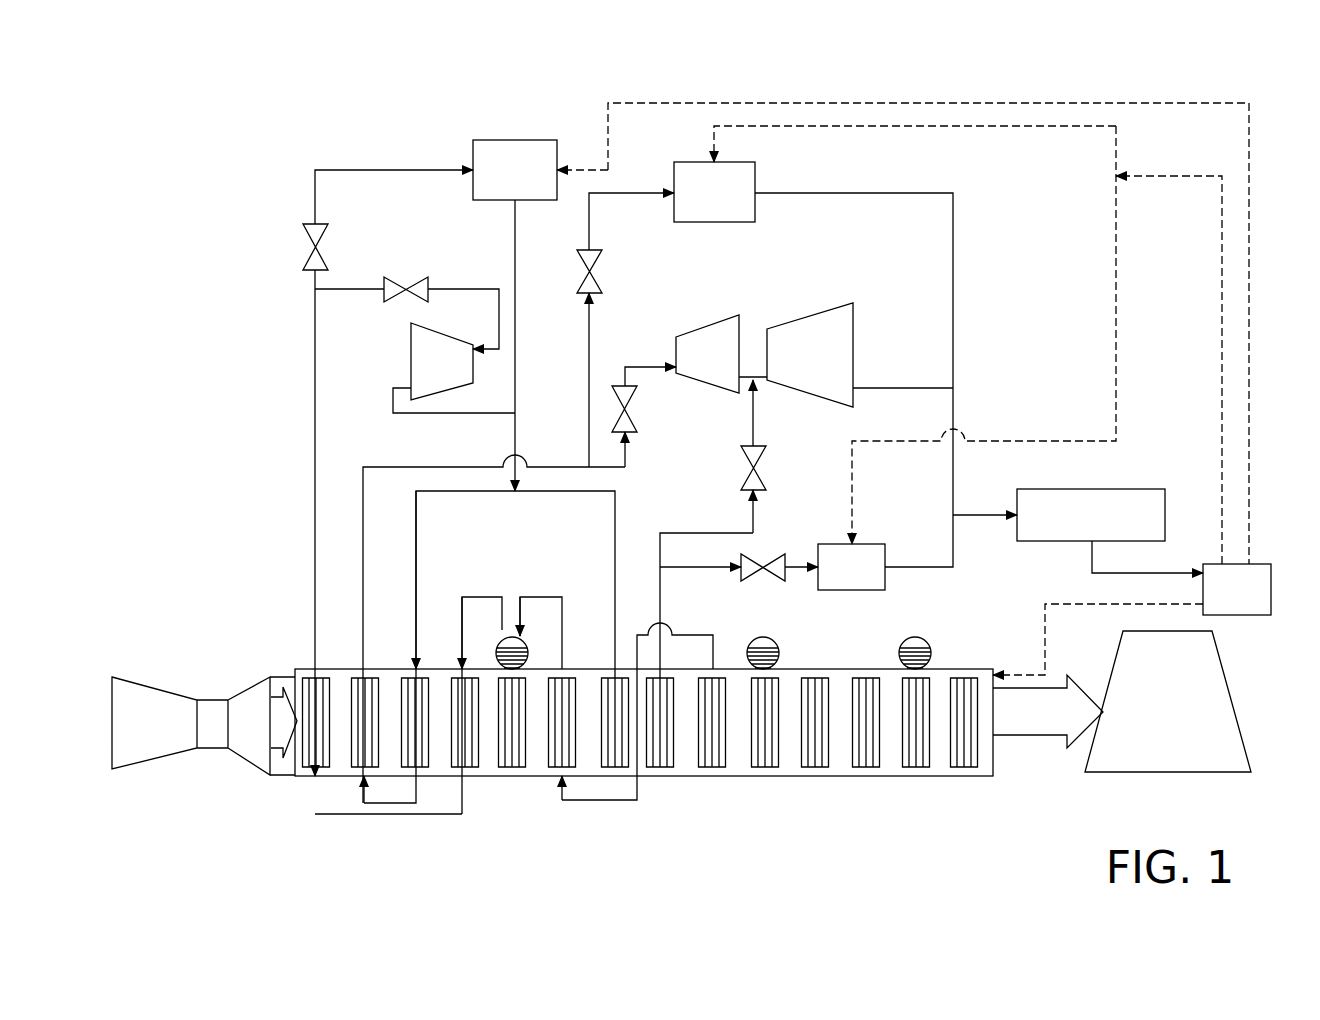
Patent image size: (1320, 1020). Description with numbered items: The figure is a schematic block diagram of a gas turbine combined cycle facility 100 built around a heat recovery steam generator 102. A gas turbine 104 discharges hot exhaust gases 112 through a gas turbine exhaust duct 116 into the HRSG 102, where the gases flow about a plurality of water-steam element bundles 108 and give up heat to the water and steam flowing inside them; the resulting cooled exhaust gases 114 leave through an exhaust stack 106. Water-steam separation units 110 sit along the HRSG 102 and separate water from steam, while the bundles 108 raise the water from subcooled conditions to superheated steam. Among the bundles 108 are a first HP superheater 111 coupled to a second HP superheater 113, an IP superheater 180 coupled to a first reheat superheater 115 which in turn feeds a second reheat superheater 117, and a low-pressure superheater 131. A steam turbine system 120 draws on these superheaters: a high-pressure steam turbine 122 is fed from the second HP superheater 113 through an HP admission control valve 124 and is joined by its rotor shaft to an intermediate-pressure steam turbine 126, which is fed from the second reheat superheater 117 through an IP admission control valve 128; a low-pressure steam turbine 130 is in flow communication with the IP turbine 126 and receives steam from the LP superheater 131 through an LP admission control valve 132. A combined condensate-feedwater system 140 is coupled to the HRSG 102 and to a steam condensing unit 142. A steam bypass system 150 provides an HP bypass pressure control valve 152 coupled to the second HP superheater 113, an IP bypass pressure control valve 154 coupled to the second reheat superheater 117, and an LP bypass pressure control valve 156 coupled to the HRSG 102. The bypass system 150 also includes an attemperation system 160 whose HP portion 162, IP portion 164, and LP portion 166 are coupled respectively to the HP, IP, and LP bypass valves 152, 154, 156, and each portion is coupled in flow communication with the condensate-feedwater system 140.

The gas turbine combined cycle facility 100 is at (268, 118).
The heat recovery steam generator 102 is at (655, 818).
The gas turbine 104 is at (147, 697).
The exhaust stack 106 is at (1144, 716).
The water-steam element bundles 108 is at (514, 789).
The water-steam separation units 110 is at (508, 632).
The first HP superheater 111 is at (474, 762).
The hot exhaust gases 112 is at (278, 711).
The second HP superheater 113 is at (305, 760).
The cooled exhaust gases 114 is at (1033, 723).
The first reheat superheater 115 is at (410, 762).
The gas turbine exhaust duct 116 is at (289, 668).
The second reheat superheater 117 is at (358, 752).
The steam turbine system 120 is at (766, 312).
The high-pressure steam turbine 122 is at (420, 375).
The HP admission control valve 124 is at (420, 283).
The intermediate-pressure steam turbine 126 is at (686, 369).
The IP admission control valve 128 is at (632, 410).
The low-pressure steam turbine 130 is at (789, 365).
The low-pressure superheater 131 is at (674, 756).
The LP admission control valve 132 is at (745, 469).
The combined condensate-feedwater system 140 is at (1216, 603).
The steam condensing unit 142 is at (1070, 528).
The steam bypass system 150 is at (282, 200).
The HP bypass pressure control valve 152 is at (302, 257).
The IP bypass pressure control valve 154 is at (600, 272).
The LP bypass pressure control valve 156 is at (771, 553).
The attemperation system 160 is at (580, 138).
The HP portion 162 is at (494, 183).
The IP portion 164 is at (693, 205).
The LP portion 166 is at (831, 580).
The IP superheater 180 is at (624, 676).